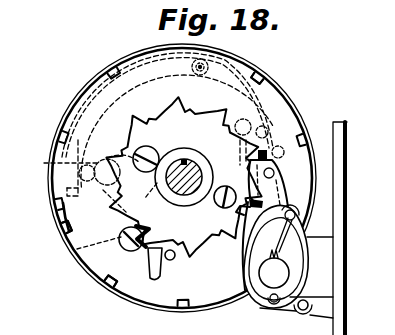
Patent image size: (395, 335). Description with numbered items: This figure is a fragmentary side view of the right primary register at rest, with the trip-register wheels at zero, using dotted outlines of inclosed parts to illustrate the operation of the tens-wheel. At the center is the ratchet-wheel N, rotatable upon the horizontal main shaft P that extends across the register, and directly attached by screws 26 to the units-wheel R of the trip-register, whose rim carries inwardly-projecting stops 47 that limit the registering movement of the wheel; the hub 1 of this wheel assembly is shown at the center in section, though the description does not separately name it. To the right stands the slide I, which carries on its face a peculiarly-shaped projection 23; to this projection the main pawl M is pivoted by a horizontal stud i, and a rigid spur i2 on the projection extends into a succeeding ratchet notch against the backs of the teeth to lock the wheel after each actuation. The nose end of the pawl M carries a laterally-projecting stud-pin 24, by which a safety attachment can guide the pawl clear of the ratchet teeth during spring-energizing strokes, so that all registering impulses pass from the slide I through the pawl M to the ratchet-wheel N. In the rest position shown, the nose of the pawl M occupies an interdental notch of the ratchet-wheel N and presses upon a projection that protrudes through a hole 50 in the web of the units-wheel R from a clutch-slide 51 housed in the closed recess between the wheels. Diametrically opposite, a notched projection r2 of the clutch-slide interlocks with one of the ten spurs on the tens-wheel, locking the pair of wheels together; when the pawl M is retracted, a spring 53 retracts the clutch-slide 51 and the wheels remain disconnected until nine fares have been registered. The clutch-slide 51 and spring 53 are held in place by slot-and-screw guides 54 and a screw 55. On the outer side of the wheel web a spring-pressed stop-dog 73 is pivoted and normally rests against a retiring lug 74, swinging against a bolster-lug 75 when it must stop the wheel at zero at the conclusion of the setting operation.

The units-wheel R is at (182, 178).
The ratchet-wheel N is at (183, 177).
The hub 1 is at (213, 190).
The screws 26 is at (150, 151).
The main shaft P is at (172, 183).
The slot-and-screw guides 54 is at (298, 84).
The clutch-slide 51 is at (81, 200).
The bolster-lugs 75 is at (110, 247).
The stop-dog 73 is at (151, 265).
The retiring lug 74 is at (172, 260).
The main pawl M is at (280, 187).
The hole 50 is at (273, 170).
The stud i is at (276, 256).
The stud-pin 24 is at (290, 221).
The rigid spur i2 is at (258, 271).
The projection 23 is at (316, 299).
The slide I is at (347, 243).
The screw 55 is at (214, 61).
The spring 53 is at (236, 90).
The stops 47 is at (112, 279).
The notched projection r2 is at (67, 243).